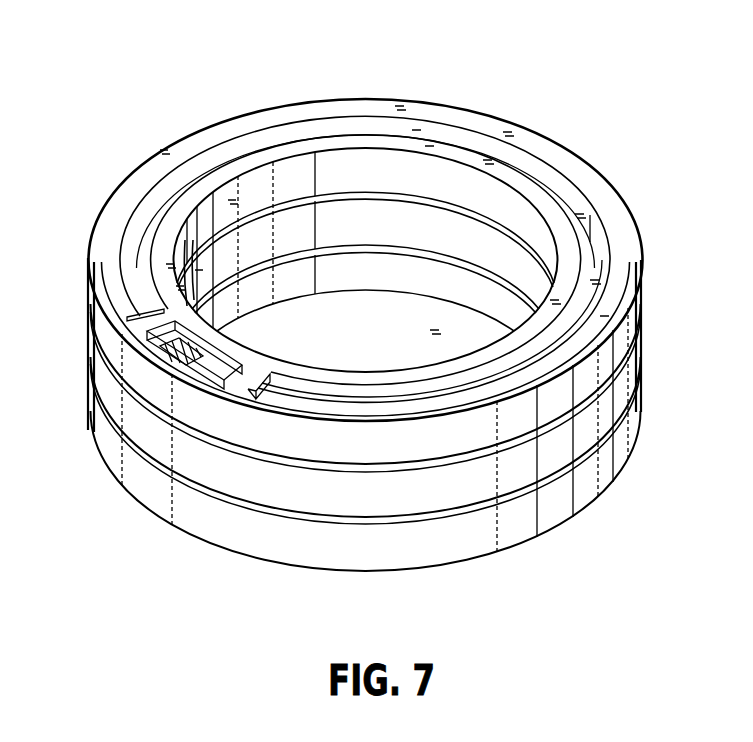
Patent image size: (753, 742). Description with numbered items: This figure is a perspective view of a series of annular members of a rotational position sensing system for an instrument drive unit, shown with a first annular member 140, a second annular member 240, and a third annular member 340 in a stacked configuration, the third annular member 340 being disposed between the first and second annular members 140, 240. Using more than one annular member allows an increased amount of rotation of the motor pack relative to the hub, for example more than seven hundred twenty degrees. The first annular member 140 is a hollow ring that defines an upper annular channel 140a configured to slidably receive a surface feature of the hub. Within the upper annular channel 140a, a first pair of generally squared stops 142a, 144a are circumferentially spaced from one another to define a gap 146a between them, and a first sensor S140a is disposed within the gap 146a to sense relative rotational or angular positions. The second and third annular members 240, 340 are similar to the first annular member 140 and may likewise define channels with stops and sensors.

The annular member 140 is at (551, 408).
The third annular member 340 is at (473, 488).
The second annular member 240 is at (387, 543).
The upper annular channel 140a is at (589, 222).
The first sensor S140a is at (195, 343).
The stop 142a is at (152, 308).
The stop 144a is at (260, 390).
The gap 146a is at (213, 370).